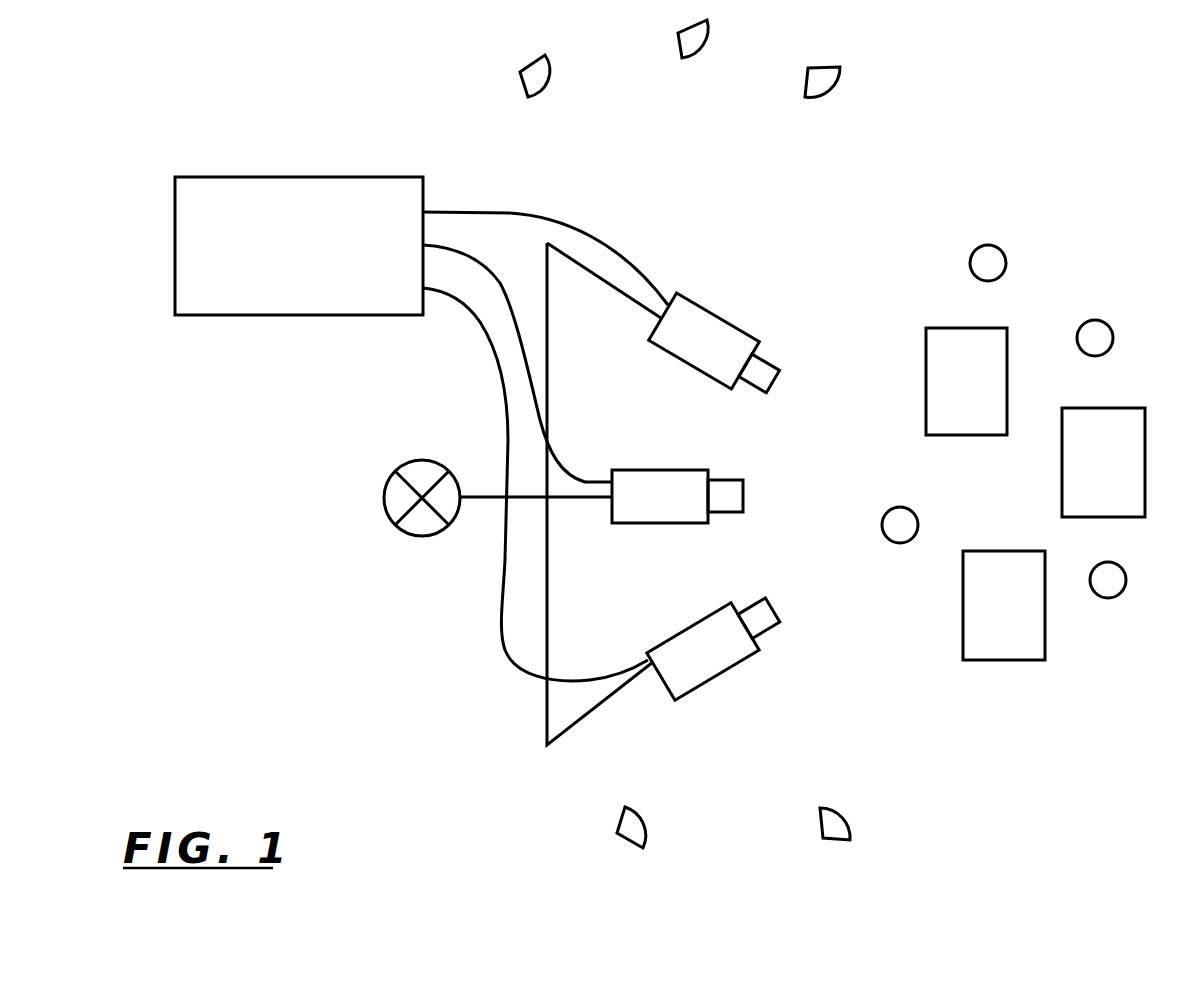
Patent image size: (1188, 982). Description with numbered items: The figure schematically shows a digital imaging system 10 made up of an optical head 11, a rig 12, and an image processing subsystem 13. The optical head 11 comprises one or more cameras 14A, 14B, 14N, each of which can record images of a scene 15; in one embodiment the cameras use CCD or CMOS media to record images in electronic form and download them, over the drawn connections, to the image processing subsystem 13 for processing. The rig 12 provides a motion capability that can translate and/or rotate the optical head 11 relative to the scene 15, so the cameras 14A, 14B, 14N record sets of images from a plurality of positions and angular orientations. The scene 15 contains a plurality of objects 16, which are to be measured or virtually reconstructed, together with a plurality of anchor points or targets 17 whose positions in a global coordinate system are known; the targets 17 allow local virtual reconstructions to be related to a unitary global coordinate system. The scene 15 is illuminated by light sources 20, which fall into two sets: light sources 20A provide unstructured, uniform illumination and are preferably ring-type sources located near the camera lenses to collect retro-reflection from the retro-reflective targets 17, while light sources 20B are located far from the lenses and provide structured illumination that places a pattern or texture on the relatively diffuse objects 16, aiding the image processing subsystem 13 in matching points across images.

The digital imaging system 10 is at (273, 98).
The optical head 11 is at (762, 285).
The rig 12 is at (550, 320).
The image processing subsystem 13 is at (299, 246).
The camera 14A is at (747, 333).
The camera 14B is at (682, 466).
The camera 14N is at (728, 672).
The scene 15 is at (895, 235).
The objects 16 is at (993, 551).
The targets 17 is at (1083, 323).
The light sources 20 is at (505, 45).
The light sources 20A is at (552, 75).
The light sources 20B is at (808, 68).